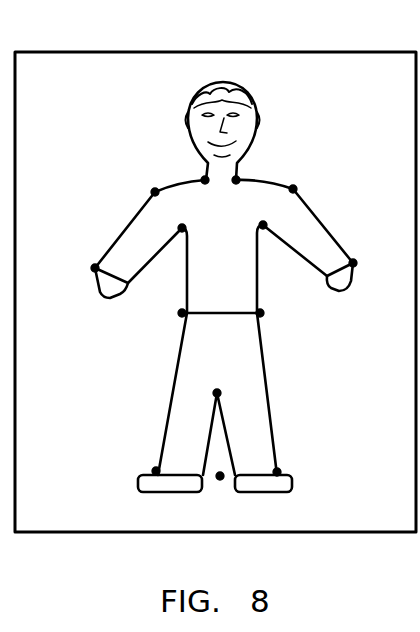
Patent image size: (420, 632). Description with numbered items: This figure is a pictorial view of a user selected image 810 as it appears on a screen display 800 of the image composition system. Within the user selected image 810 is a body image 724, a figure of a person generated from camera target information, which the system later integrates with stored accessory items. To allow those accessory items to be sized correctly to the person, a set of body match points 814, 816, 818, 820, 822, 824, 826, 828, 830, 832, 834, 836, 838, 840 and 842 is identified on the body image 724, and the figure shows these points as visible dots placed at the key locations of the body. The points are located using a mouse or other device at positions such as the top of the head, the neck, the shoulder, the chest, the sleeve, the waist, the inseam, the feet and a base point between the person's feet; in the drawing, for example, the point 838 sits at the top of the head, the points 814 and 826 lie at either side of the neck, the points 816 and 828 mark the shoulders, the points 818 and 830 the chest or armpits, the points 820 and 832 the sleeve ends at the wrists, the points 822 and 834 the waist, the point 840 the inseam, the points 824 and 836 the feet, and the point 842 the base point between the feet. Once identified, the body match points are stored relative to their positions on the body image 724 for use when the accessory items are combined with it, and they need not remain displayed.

The screen display 800 is at (105, 68).
The user selected image 810 is at (358, 88).
The body image 724 is at (192, 97).
The body match point 838 is at (225, 85).
The body match point 814 is at (205, 180).
The body match point 826 is at (236, 180).
The body match point 816 is at (155, 192).
The body match point 828 is at (293, 189).
The body match point 818 is at (182, 228).
The body match point 830 is at (263, 225).
The left wrist feature point 820 is at (95, 268).
The body match point 832 is at (353, 263).
The body match point 822 is at (182, 313).
The body match point 834 is at (260, 313).
The body match point 840 is at (217, 393).
The body match point 824 is at (156, 471).
The body match point 836 is at (277, 472).
The body match point 842 is at (220, 480).